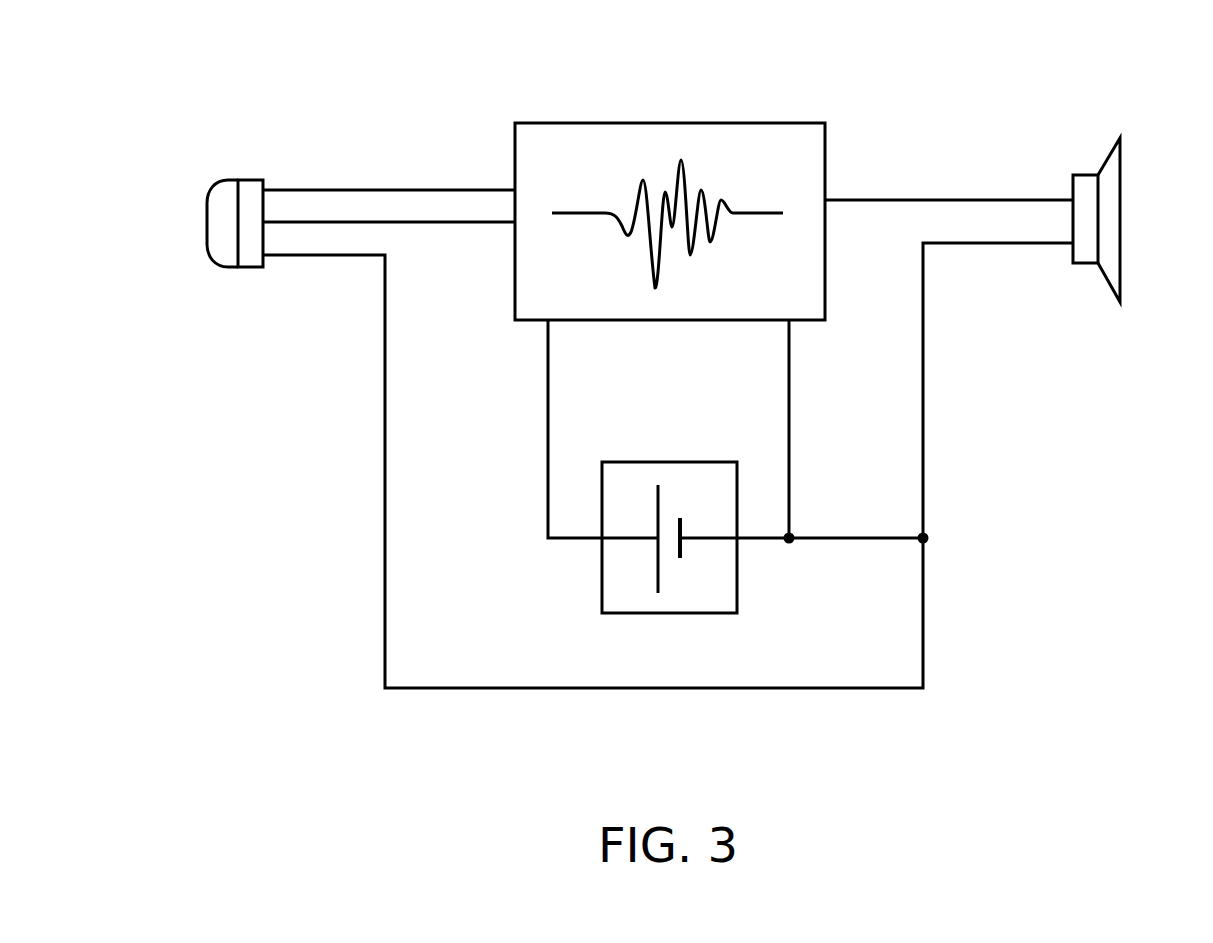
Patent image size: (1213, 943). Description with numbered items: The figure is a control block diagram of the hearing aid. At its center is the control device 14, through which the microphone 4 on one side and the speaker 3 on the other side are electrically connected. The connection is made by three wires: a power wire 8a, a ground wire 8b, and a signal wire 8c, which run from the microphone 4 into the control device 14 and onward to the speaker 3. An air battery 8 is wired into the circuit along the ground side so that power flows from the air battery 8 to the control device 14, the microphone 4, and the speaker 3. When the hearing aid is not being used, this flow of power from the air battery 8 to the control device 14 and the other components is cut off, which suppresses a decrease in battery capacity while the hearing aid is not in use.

The speaker 3 is at (1108, 207).
The microphone 4 is at (230, 225).
The air battery 8 is at (695, 580).
The power wire 8a is at (340, 187).
The ground wire 8b is at (385, 355).
The signal wire 8c is at (418, 218).
The control device 14 is at (747, 153).